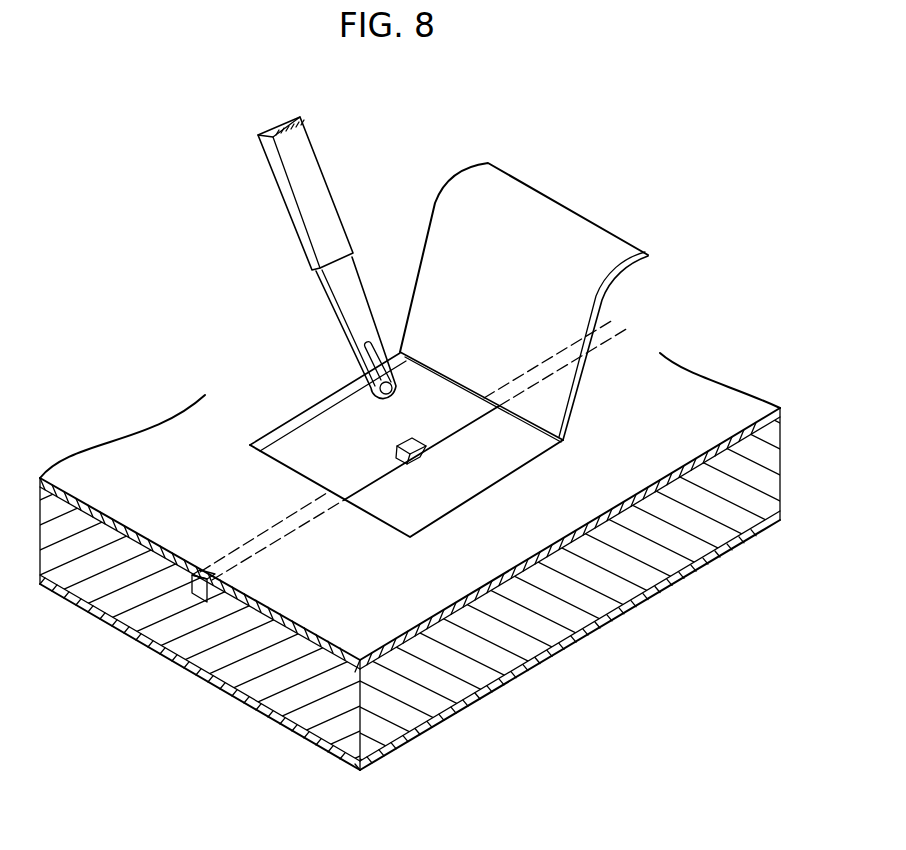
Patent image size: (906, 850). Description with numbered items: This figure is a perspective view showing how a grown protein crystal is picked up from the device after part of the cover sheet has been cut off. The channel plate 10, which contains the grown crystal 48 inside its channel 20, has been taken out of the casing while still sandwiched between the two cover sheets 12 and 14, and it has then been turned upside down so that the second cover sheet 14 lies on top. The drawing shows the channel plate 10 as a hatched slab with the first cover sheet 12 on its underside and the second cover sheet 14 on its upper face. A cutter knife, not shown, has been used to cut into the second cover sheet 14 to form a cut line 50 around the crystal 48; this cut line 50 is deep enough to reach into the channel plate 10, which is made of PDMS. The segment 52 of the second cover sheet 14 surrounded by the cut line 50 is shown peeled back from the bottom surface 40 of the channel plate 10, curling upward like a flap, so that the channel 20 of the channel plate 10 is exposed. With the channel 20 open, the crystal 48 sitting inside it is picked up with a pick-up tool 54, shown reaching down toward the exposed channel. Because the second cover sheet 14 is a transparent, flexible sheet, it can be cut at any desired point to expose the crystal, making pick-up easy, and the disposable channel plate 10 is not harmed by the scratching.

The channel plate 10 is at (435, 693).
The first cover sheet 12 is at (737, 546).
The second cover sheet 14 is at (735, 397).
The channel 20 is at (353, 485).
The bottom surface 40 is at (288, 619).
The crystal 48 is at (410, 443).
The cut line 50 is at (277, 432).
The segment 52 is at (512, 187).
The pick-up tool 54 is at (318, 156).